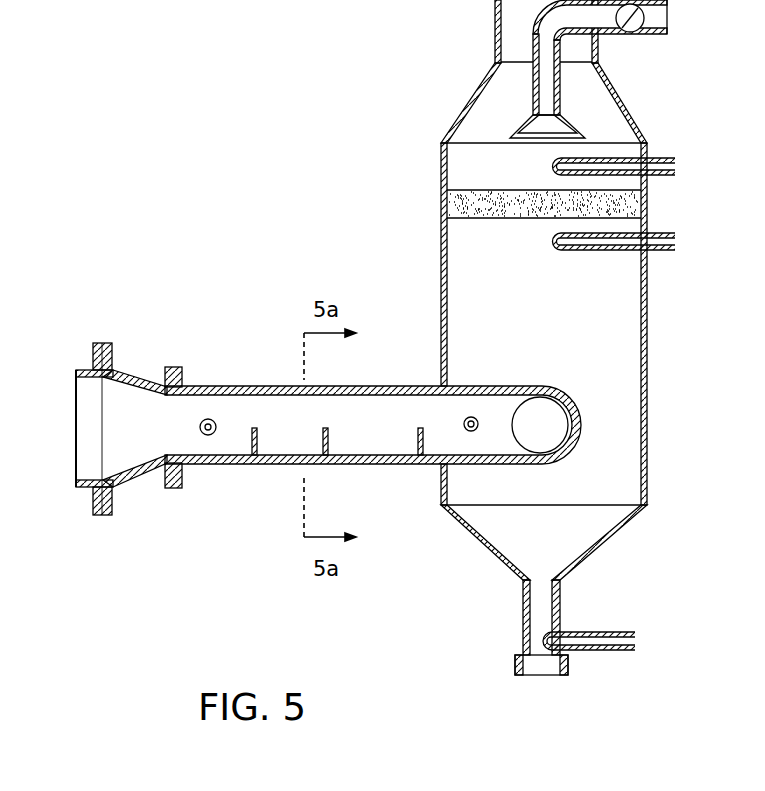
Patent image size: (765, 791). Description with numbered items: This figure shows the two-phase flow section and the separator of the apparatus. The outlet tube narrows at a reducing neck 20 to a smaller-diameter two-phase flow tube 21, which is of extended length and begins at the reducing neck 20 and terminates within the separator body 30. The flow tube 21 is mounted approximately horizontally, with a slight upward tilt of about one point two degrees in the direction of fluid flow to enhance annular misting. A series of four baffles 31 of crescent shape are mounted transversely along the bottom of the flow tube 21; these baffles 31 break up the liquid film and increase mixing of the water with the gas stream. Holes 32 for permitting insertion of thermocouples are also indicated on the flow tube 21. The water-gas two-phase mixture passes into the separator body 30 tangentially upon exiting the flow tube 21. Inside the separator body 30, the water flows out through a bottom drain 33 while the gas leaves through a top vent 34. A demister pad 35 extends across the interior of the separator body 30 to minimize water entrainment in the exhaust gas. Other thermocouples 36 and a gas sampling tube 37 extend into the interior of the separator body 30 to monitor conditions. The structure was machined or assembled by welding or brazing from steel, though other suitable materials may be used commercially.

The reducing neck 20 is at (132, 373).
The two-phase flow tube 21 is at (203, 390).
The separator body 30 is at (441, 292).
The baffles 31 is at (258, 432).
The holes 32 is at (471, 417).
The bottom drain 33 is at (560, 603).
The top vent 34 is at (495, 25).
The demister pad 35 is at (487, 218).
The thermocouples 36 is at (552, 168).
The gas sampling tube 37 is at (533, 98).